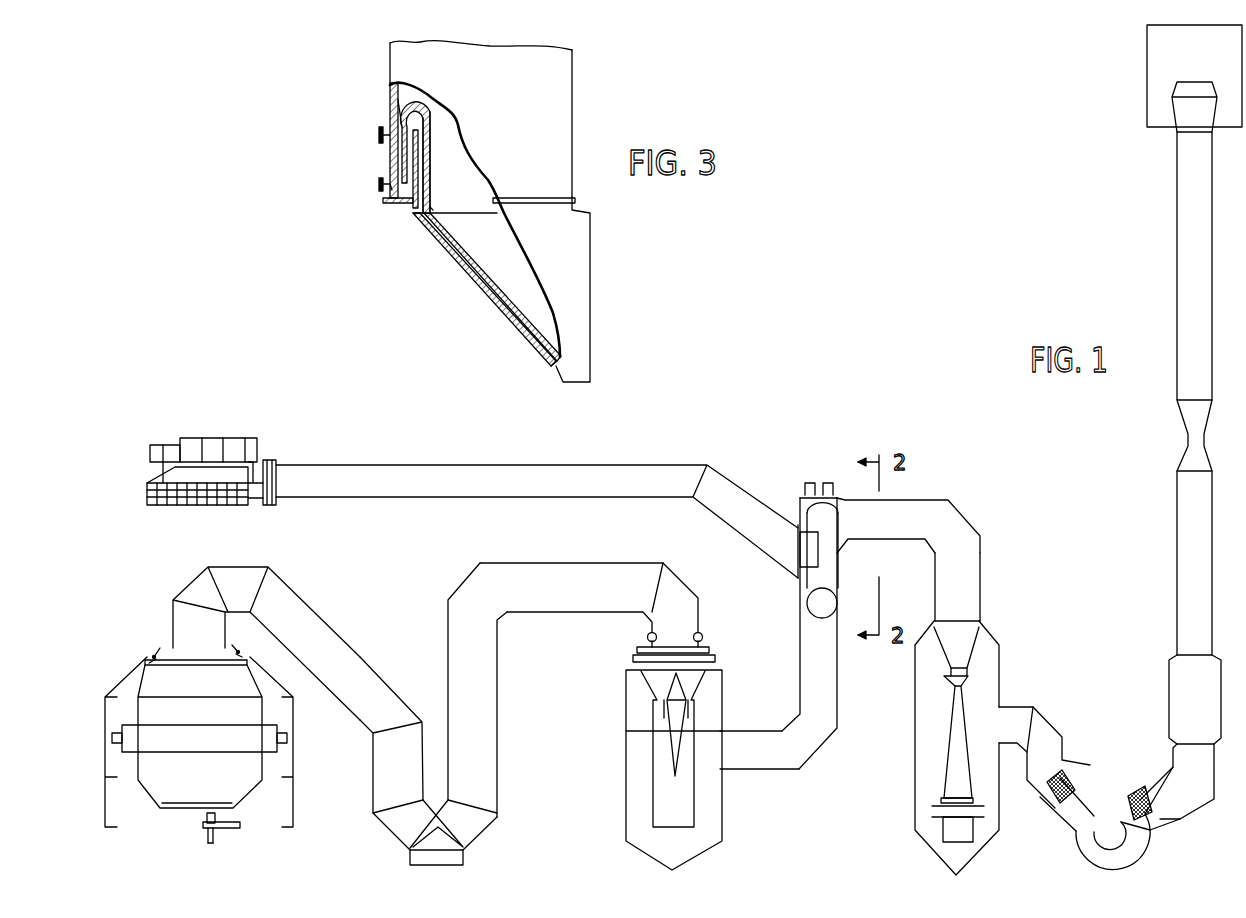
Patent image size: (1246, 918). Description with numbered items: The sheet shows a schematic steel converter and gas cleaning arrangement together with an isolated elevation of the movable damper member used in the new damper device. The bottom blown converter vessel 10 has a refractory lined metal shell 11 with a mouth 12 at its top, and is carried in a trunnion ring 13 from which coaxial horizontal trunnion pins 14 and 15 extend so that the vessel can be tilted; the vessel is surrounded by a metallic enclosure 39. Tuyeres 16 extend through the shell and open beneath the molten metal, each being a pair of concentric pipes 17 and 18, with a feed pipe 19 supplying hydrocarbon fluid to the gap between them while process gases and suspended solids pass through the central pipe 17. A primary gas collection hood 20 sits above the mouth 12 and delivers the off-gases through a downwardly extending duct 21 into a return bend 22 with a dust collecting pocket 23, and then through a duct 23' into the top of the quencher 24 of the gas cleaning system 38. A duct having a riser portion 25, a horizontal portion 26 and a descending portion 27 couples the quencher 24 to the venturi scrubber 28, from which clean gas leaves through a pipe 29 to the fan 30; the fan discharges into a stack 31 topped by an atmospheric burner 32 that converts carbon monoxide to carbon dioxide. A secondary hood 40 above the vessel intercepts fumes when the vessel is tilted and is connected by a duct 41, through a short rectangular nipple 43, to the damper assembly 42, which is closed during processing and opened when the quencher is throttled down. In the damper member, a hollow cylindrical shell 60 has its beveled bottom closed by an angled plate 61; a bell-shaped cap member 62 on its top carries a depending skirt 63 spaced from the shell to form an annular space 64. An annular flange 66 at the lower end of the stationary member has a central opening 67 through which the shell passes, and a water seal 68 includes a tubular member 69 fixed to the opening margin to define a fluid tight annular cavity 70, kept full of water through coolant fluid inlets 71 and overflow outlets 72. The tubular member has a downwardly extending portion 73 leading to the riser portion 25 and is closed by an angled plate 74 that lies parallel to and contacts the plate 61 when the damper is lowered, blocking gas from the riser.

In FIG. 1, the converter vessel 10 is at (190, 762).
In FIG. 1, the metal shell 11 is at (250, 793).
In FIG. 1, the mouth 12 is at (182, 668).
In FIG. 1, the trunnion ring 13 is at (215, 753).
In FIG. 1, the trunnion pin 14 is at (110, 740).
In FIG. 1, the trunnion pin 15 is at (287, 737).
In FIG. 1, the tuyeres 16 is at (203, 835).
In FIG. 1, the central pipe 17 is at (217, 833).
In FIG. 1, the outer pipe 18 is at (205, 818).
In FIG. 1, the feed pipe 19 is at (236, 828).
In FIG. 1, the gas collection hood 20 is at (170, 645).
In FIG. 1, the duct 21 is at (360, 630).
In FIG. 1, the return bend 22 is at (483, 833).
In FIG. 1, the dust collecting pocket 23 is at (455, 875).
In FIG. 1, the duct 23' is at (575, 690).
In FIG. 1, the quencher 24 is at (626, 799).
In FIG. 1, the riser portion 25 is at (838, 704).
In FIG. 1, the horizontal portion 26 is at (919, 506).
In FIG. 1, the descending portion 27 is at (970, 575).
In FIG. 1, the venturi scrubber 28 is at (1000, 680).
In FIG. 1, the pipe 29 is at (1051, 718).
In FIG. 1, the fan 30 is at (1149, 849).
In FIG. 1, the stack 31 is at (1188, 567).
In FIG. 1, the atmospheric burner 32 is at (1155, 78).
In FIG. 1, the gas cleaning system 38 is at (770, 704).
In FIG. 1, the metallic enclosure 39 is at (118, 680).
In FIG. 1, the secondary hood 40 is at (140, 447).
In FIG. 1, the duct 41 is at (383, 468).
In FIG. 1, the damper assembly 42 is at (812, 581).
In FIG. 1, the rectangular nipple 43 is at (808, 535).
In FIG. 3, the cylindrical shell 60 is at (433, 207).
In FIG. 3, the plate 61 is at (483, 272).
In FIG. 3, the cap member 62 is at (420, 103).
In FIG. 3, the skirt 63 is at (403, 157).
In FIG. 3, the annular space 64 is at (417, 117).
In FIG. 3, the annular flange 66 is at (393, 207).
In FIG. 3, the central opening 67 is at (433, 210).
In FIG. 3, the water seal 68 is at (410, 217).
In FIG. 3, the tubular member 69 is at (418, 163).
In FIG. 3, the annular cavity 70 is at (378, 184).
In FIG. 3, the coolant fluid inlets 71 is at (400, 188).
In FIG. 3, the outlets 72 is at (377, 135).
In FIG. 3, the downwardly extending portion 73 is at (402, 117).
In FIG. 3, the plate 74 is at (488, 262).